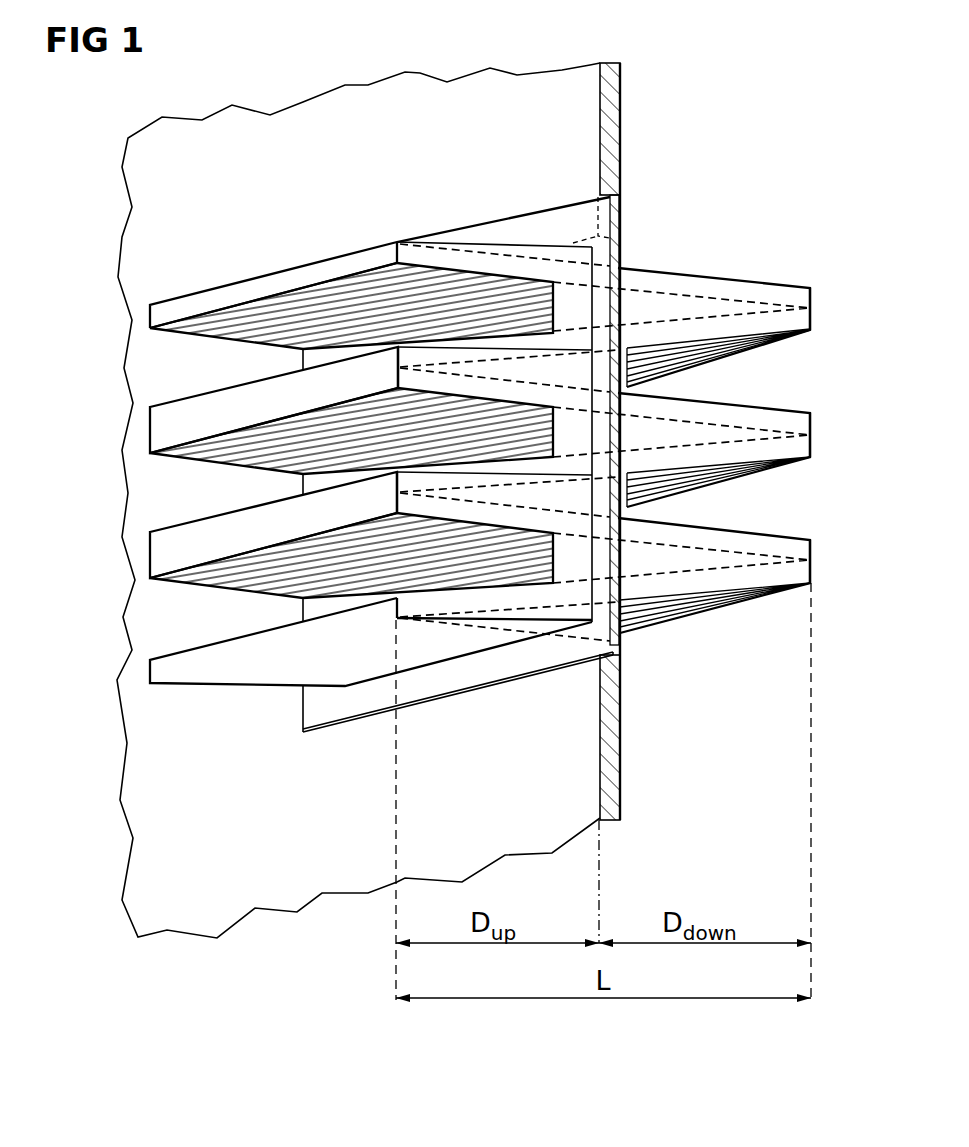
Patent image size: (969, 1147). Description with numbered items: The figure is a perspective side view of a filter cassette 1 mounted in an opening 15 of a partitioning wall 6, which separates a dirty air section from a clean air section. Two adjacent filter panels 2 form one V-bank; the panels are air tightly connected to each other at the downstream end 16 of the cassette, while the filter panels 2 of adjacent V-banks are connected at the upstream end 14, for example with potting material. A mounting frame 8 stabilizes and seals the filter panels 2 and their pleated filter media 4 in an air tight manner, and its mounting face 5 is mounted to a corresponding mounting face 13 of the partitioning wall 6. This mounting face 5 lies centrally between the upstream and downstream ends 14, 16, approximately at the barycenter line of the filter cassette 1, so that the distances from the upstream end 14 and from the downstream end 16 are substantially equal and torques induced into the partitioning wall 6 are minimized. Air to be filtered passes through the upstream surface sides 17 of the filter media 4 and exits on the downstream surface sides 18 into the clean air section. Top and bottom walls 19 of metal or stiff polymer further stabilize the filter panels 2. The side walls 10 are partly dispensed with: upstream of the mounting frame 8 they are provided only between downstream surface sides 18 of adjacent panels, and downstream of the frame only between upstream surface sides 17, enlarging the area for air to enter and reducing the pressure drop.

The filter cassette 1 is at (727, 205).
The filter panel 2 is at (812, 297).
The filter media 4 is at (220, 448).
The mounting face 5 is at (618, 218).
The partitioning wall 6 is at (348, 885).
The mounting frame 8 is at (455, 683).
The side wall 10 is at (415, 255).
The mounting face of the partitioning wall 13 is at (598, 205).
The upstream end 14 is at (118, 495).
The opening 15 is at (622, 247).
The downstream end 16 is at (822, 475).
The upstream surface side 17 is at (262, 322).
The downstream surface side 18 is at (723, 352).
The top and bottom walls 19 is at (487, 242).